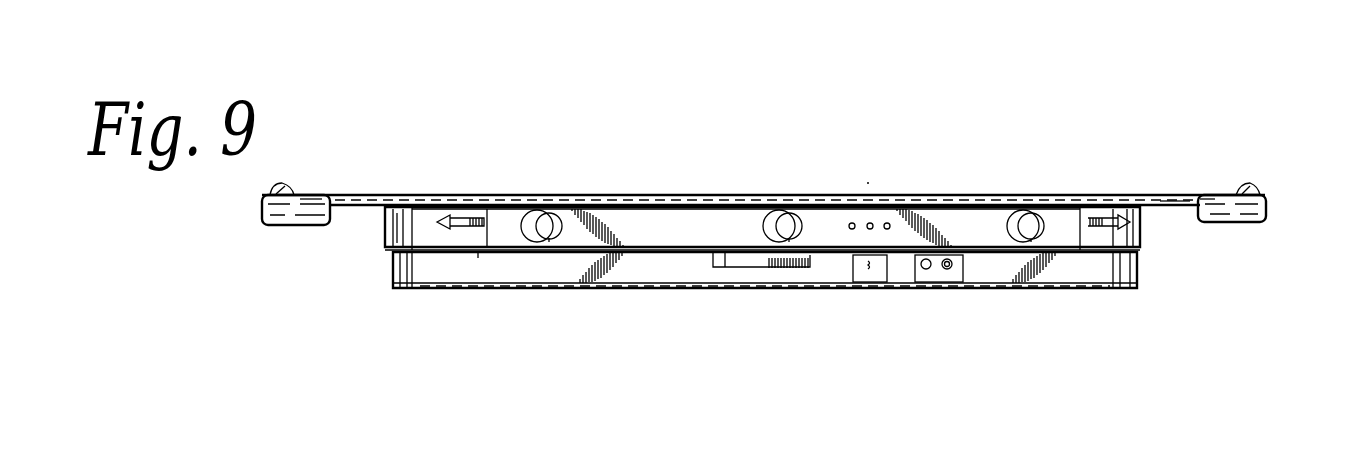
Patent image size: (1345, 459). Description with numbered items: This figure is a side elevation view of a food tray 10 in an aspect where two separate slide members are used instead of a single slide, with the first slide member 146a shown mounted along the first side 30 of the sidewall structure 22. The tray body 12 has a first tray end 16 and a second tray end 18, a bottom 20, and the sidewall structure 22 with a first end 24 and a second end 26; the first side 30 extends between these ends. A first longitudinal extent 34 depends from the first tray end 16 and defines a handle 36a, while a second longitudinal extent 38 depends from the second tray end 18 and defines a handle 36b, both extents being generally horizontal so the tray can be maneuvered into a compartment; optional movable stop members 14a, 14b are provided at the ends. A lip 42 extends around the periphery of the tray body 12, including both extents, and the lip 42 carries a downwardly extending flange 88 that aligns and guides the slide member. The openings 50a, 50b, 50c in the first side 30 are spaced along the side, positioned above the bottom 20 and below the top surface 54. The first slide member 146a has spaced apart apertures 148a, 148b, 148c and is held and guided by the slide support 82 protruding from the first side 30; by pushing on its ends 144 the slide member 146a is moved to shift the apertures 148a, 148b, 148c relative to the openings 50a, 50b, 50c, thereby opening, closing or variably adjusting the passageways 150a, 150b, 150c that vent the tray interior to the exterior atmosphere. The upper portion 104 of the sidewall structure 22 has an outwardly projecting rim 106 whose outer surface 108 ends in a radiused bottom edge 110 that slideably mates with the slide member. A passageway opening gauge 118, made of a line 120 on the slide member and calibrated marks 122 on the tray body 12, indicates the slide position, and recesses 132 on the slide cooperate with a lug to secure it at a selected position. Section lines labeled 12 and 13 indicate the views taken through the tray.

The food tray 10 is at (1032, 96).
The tray body 12 is at (788, 98).
The section line 13 is at (867, 143).
The movable stop member 14a is at (262, 196).
The movable stop member 14b is at (1258, 183).
The first tray end 16 is at (264, 220).
The second tray end 18 is at (1190, 196).
The bottom 20 is at (430, 292).
The sidewall structure 22 is at (385, 232).
The first end 24 is at (392, 255).
The second end 26 is at (1140, 250).
The first side 30 is at (412, 268).
The first longitudinal extent 34 is at (363, 195).
The handle 36a is at (283, 193).
The handle 36b is at (1212, 195).
The second longitudinal extent 38 is at (1198, 196).
The lip 42 is at (405, 218).
The opening 50a is at (555, 240).
The opening 50b is at (790, 238).
The opening 50c is at (1038, 238).
The top surface 54 is at (323, 195).
The slide support 82 is at (730, 263).
The flange 88 is at (1143, 210).
The upper portion 104 is at (487, 210).
The rim 106 is at (440, 212).
The outer surface 108 is at (428, 212).
The radiused bottom edge 110 is at (1097, 222).
The passageway opening gauge 118 is at (838, 228).
The line 120 is at (870, 258).
The calibrated marks 122 is at (853, 258).
The recess 132 is at (900, 205).
The end 144 is at (478, 252).
The first slide member 146a is at (635, 235).
The aperture 148a is at (535, 233).
The aperture 148b is at (773, 223).
The aperture 148c is at (1008, 236).
The passageway 150a is at (555, 222).
The passageway 150b is at (790, 227).
The passageway 150c is at (1035, 222).